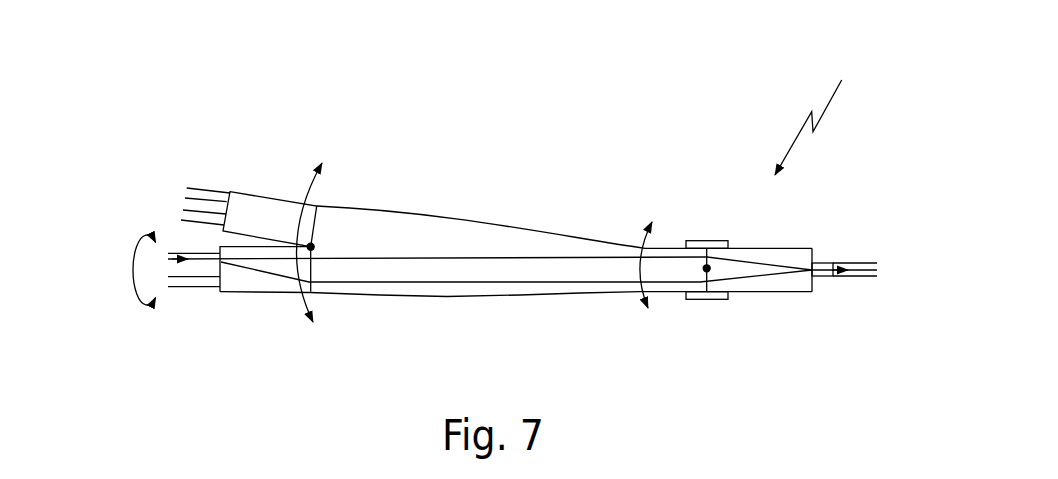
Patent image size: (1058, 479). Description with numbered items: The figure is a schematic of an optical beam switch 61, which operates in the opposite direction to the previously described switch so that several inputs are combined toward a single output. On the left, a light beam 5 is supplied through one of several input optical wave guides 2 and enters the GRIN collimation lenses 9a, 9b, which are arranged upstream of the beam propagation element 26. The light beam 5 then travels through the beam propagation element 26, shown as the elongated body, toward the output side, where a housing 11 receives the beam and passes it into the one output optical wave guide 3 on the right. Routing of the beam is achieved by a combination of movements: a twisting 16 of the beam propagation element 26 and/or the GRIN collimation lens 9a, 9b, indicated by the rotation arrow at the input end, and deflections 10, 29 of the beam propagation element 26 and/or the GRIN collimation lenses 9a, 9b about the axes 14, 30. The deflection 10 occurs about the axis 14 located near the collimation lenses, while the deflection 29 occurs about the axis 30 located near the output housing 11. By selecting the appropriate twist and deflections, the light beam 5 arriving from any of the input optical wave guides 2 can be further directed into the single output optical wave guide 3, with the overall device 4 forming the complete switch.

The input optical wave guide 2 is at (202, 262).
The output optical wave guide 3 is at (840, 260).
The fiber coupling device 4 is at (528, 176).
The light beam 5 is at (183, 255).
The GRIN collimation lens 9a is at (248, 205).
The GRIN collimation lens 9b is at (249, 294).
The deflection 10 is at (303, 203).
The output housing 11 is at (782, 285).
The axis 14 is at (313, 247).
The twisting direction 16 is at (154, 236).
The beam propagation element 26 is at (449, 292).
The deflection 29 is at (643, 246).
The axis 30 is at (712, 267).
The beam switch 61 is at (815, 115).